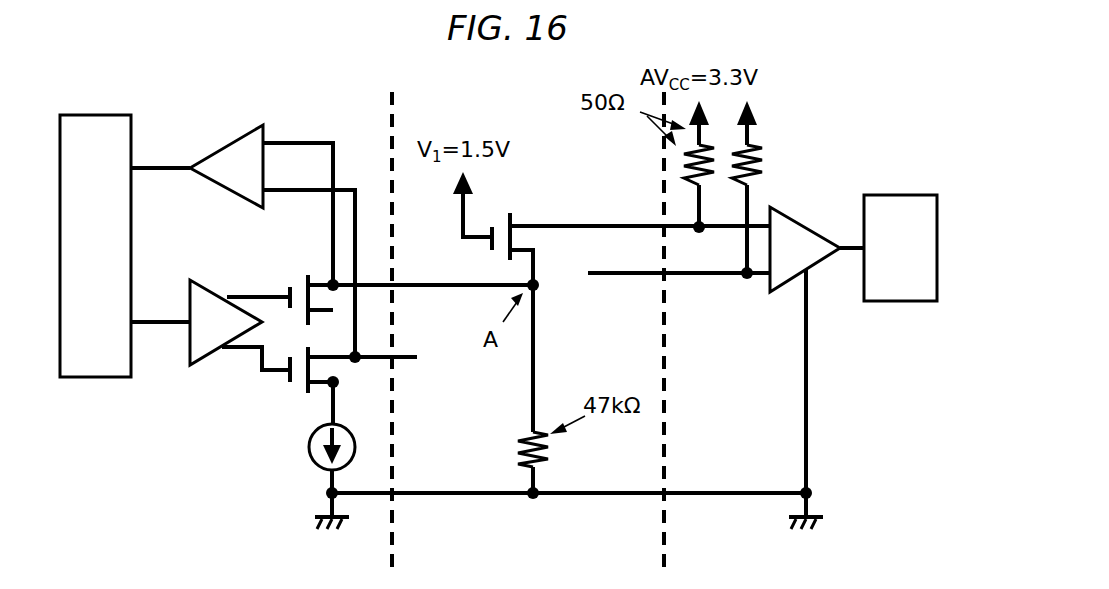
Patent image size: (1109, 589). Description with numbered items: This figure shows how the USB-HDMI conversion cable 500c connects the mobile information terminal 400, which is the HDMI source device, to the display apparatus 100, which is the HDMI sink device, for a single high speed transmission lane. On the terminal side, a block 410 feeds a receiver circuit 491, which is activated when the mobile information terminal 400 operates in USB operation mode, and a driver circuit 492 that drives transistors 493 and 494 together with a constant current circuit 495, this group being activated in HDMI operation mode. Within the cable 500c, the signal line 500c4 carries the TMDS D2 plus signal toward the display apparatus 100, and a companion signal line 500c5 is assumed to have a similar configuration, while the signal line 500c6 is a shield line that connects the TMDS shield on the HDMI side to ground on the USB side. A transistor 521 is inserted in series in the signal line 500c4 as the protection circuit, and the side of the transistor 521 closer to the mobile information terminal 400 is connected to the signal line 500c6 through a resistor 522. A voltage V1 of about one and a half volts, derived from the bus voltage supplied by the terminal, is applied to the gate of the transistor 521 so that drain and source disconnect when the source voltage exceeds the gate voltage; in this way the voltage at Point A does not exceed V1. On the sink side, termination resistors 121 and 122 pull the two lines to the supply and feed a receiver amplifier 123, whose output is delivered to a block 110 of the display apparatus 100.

The controller / signal processing unit 410 is at (116, 150).
The receiver circuit 491 is at (212, 182).
The driver circuit 492 is at (224, 346).
The transistor 493 is at (296, 274).
The transistor 494 is at (298, 397).
The constant current circuit 495 is at (308, 462).
The transistor 521 is at (510, 208).
The resistor 522 is at (508, 451).
The termination resistor (50 Ω) 121 is at (724, 143).
The termination resistor (50 Ω) 122 is at (766, 170).
The differential receiver 123 is at (818, 264).
The signal processing circuit 110 is at (921, 229).
The mobile information terminal 400 is at (392, 558).
The cable 500c is at (392, 558).
The display apparatus 100 is at (664, 558).
The signal line 500c4 is at (608, 228).
The signal line 500c5 is at (608, 275).
The signal line 500c6 is at (606, 491).